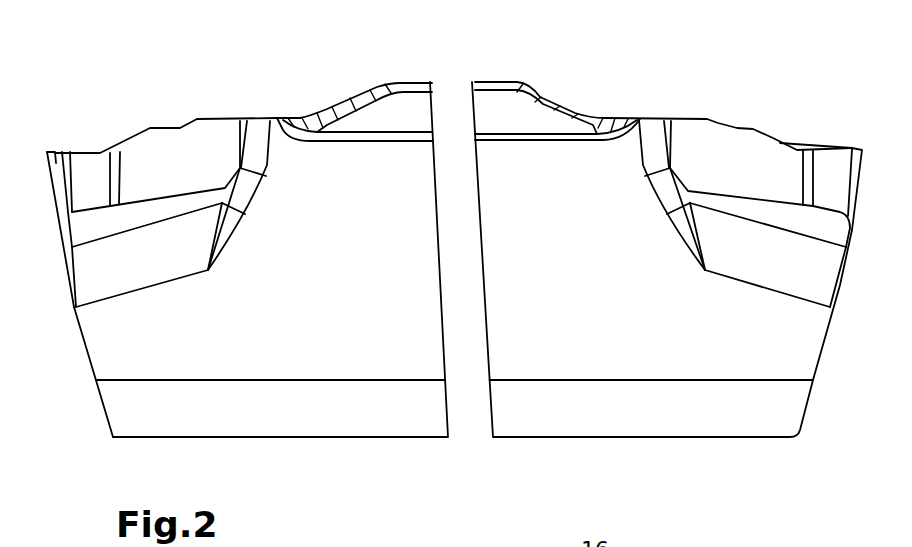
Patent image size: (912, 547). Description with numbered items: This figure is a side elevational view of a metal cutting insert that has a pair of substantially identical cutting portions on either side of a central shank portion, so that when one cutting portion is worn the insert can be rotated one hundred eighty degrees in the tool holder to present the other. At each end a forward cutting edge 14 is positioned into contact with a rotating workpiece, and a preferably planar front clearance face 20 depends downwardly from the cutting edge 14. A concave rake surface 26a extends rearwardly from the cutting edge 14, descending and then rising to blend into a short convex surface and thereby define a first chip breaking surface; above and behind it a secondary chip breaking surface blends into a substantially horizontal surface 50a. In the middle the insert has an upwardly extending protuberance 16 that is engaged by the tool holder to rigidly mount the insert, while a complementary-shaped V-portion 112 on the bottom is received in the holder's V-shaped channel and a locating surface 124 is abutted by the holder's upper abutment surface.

The cutting edge 14 is at (47, 160).
The protuberance 16 is at (423, 80).
The front clearance face 20 is at (55, 198).
The rake surface 26a is at (98, 147).
The horizontal surface 50a is at (218, 133).
The V-portion 112 is at (229, 421).
The locating surface 124 is at (84, 345).